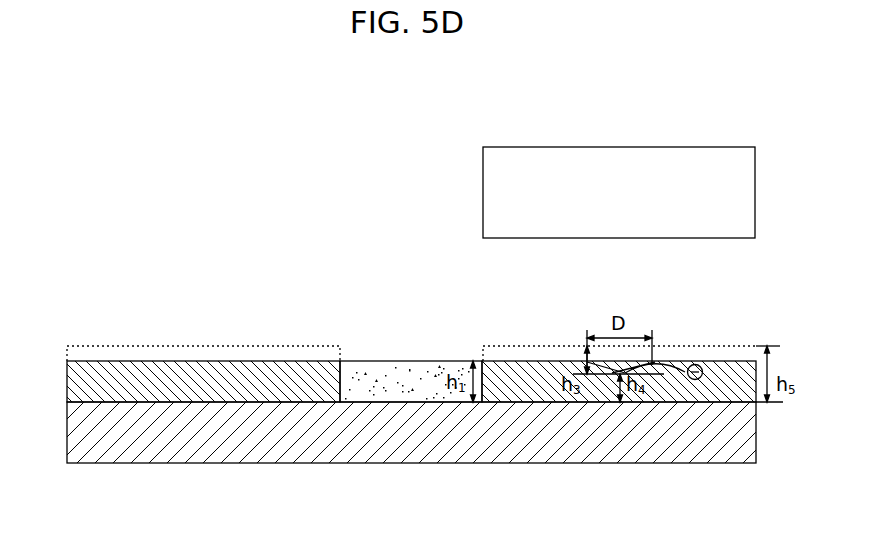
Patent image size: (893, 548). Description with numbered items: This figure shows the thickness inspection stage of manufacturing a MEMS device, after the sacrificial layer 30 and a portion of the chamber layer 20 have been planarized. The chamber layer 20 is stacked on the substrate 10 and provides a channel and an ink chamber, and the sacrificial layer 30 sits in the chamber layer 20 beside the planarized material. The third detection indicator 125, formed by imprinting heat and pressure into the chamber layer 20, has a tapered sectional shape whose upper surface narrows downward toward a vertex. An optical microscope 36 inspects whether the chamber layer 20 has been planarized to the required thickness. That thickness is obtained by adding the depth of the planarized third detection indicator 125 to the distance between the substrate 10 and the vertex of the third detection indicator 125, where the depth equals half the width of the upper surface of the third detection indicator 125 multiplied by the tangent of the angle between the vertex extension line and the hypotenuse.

The substrate 10 is at (80, 431).
The chamber layer 20 is at (78, 379).
The sacrificial layer 30 is at (400, 375).
The optical microscope 36 is at (757, 190).
The third detection indicator 125 is at (576, 348).